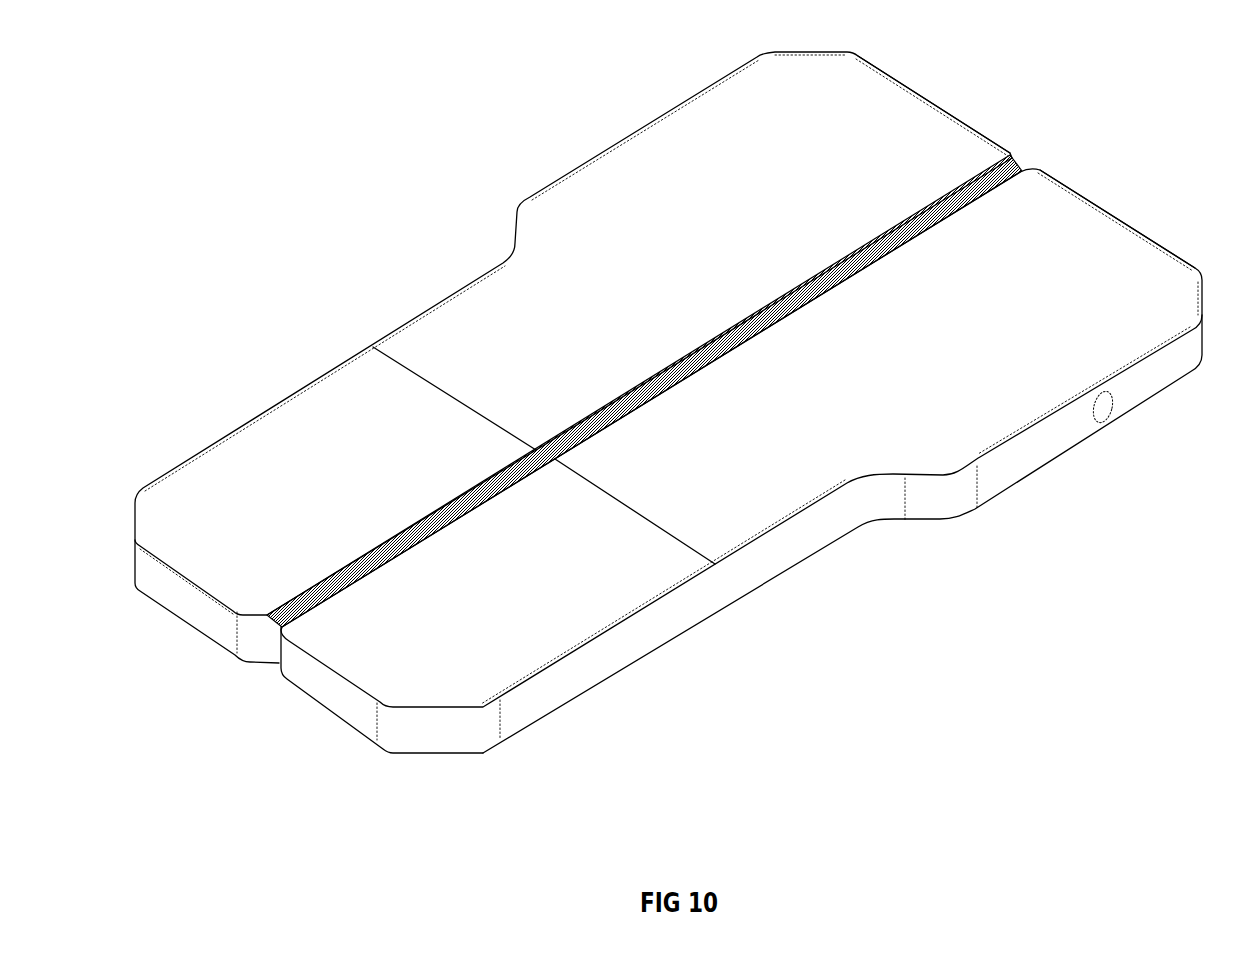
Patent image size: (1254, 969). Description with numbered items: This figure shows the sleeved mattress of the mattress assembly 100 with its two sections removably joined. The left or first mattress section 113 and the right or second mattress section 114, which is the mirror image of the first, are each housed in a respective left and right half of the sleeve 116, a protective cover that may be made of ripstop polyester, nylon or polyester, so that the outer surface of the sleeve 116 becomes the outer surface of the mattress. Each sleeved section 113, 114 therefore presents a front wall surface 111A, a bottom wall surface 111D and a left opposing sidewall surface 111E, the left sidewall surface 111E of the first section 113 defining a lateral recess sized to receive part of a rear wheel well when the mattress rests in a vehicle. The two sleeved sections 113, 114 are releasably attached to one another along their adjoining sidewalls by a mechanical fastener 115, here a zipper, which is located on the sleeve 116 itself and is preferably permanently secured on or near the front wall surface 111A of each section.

The mattress assembly 100 is at (521, 138).
The front wall surface 111A is at (787, 195).
The bottom wall surface 111D is at (320, 693).
The left opposing sidewall surface 111E is at (662, 628).
The first mattress section 113 is at (920, 91).
The second mattress section 114 is at (1117, 215).
The mechanical fastener 115 is at (1016, 158).
The sleeve 116 is at (1033, 475).